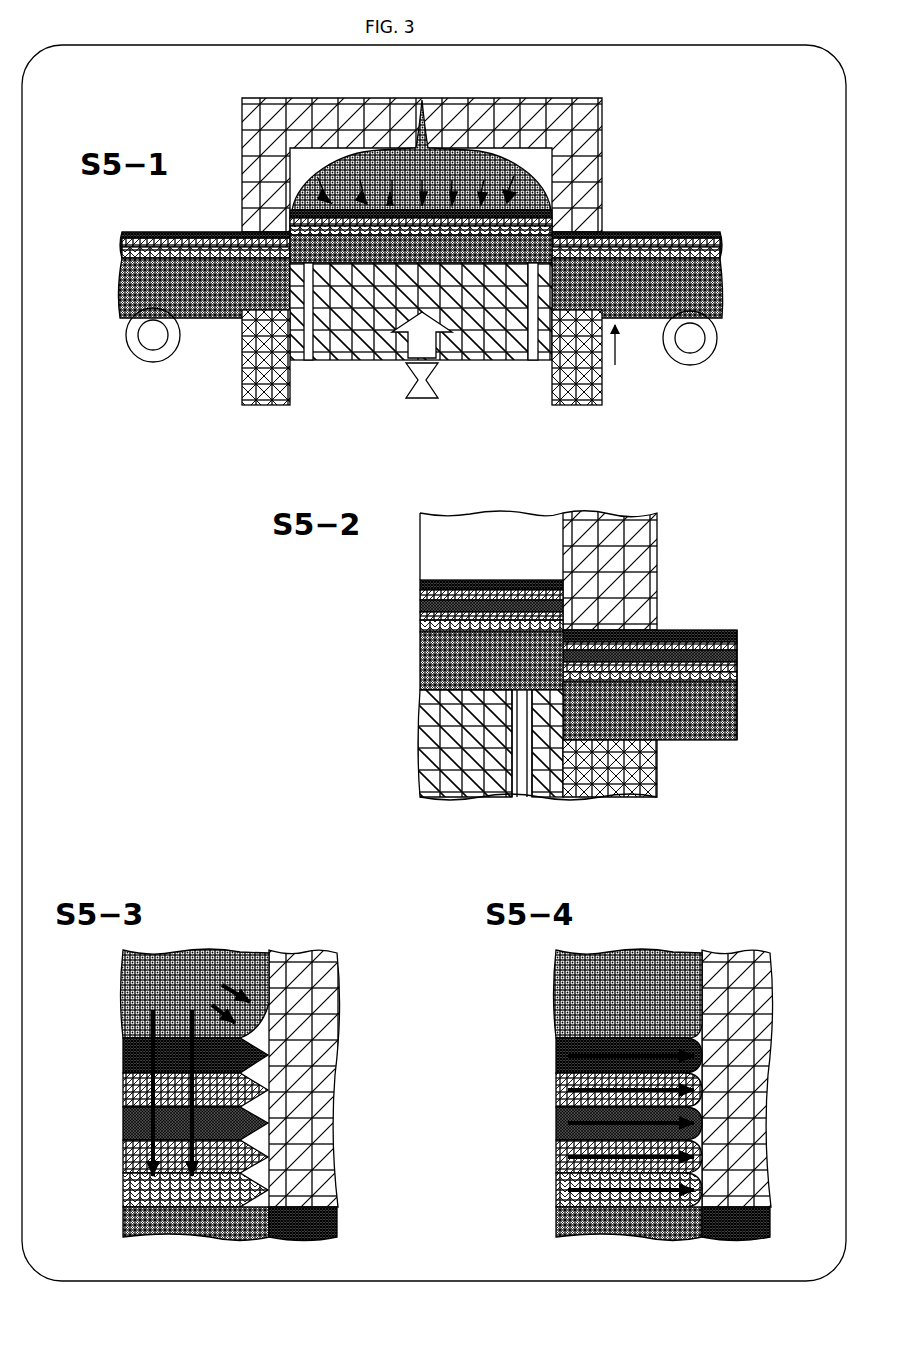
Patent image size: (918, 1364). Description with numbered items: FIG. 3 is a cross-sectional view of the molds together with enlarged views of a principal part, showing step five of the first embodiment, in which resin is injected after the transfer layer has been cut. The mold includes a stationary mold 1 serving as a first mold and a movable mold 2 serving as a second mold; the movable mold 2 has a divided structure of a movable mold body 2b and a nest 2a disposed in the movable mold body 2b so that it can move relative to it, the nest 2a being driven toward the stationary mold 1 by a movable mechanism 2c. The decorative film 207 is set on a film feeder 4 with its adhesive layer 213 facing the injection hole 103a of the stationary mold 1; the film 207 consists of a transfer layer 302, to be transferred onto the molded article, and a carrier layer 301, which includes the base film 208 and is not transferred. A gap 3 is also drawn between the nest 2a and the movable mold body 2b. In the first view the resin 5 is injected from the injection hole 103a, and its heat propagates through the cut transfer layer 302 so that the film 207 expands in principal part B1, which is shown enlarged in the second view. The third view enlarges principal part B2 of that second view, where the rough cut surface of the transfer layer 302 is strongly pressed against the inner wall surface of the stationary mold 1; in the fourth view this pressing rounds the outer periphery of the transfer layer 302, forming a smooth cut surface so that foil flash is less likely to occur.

The stationary mold 1 is at (592, 116).
The movable mold 2 is at (447, 561).
The nest 2a is at (355, 345).
The movable mold body 2b is at (272, 402).
The movable mechanism 2c is at (454, 382).
The gap / vent passage 3 is at (307, 360).
The film feeder 4 is at (152, 362).
The resin 5 is at (325, 196).
The injection hole 103a is at (420, 140).
The decorative film 207 is at (424, 712).
The base film 208 is at (440, 684).
The adhesive layer 213 is at (440, 582).
The carrier layer 301 is at (405, 622).
The transfer layer 302 is at (405, 660).
The principal part B1 is at (590, 212).
The principal part B2 is at (590, 590).